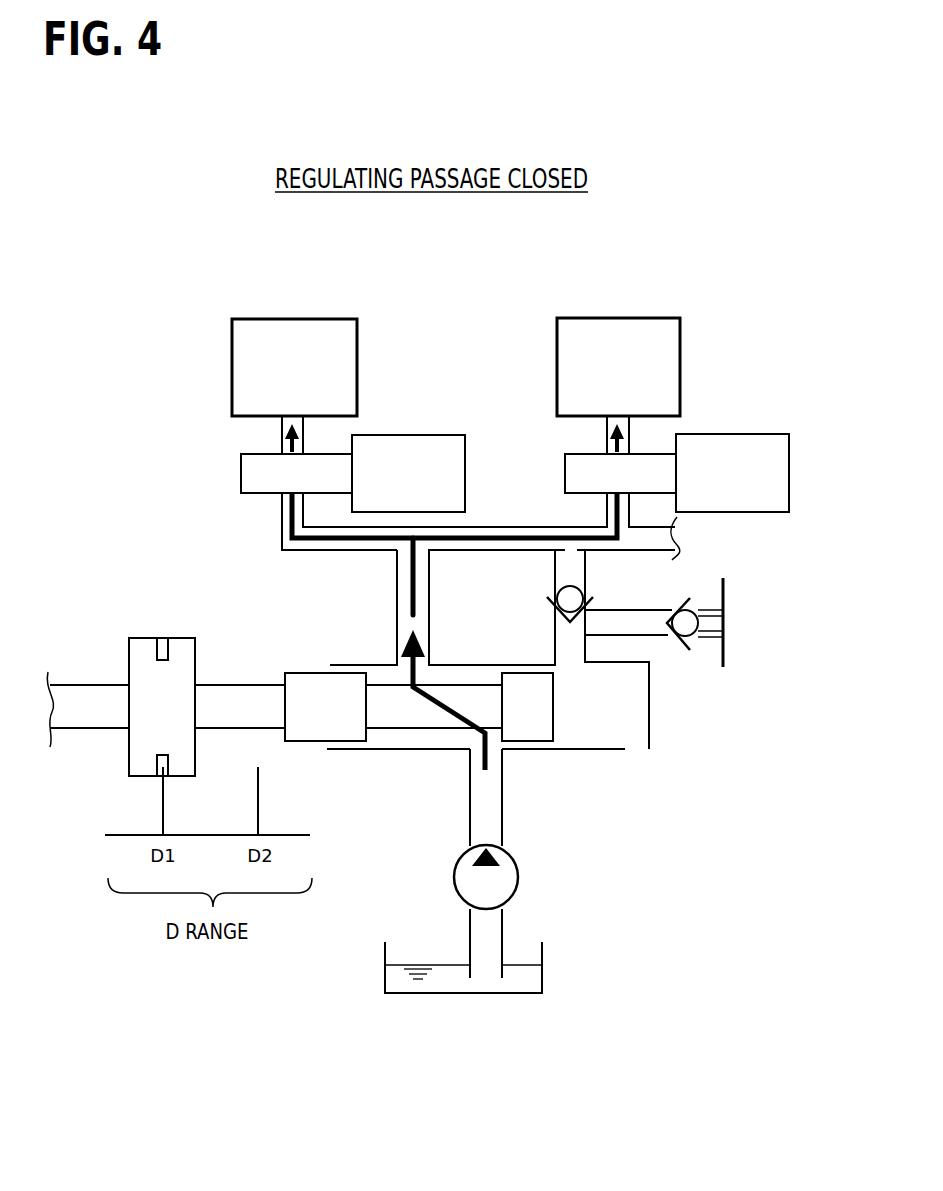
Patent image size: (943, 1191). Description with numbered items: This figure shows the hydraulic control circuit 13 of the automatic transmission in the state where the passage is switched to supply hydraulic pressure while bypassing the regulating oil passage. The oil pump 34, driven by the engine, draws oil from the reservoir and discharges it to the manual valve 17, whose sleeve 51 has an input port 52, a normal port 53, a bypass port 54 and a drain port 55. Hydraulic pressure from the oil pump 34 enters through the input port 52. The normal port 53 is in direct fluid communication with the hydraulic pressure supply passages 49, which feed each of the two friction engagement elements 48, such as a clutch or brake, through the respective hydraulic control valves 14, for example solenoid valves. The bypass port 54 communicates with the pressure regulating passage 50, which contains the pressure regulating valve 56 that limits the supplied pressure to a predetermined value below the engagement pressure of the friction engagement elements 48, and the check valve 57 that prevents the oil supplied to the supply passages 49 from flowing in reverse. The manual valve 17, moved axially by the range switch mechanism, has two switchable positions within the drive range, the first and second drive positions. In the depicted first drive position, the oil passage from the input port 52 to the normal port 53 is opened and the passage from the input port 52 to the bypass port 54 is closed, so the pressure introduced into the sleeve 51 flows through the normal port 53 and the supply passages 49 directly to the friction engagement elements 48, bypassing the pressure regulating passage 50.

The hydraulic control circuit 13 is at (781, 568).
The hydraulic control valves 14 is at (420, 435).
The manual valve 17 is at (307, 722).
The oil pump 34 is at (518, 875).
The friction engagement elements 48 is at (358, 350).
The hydraulic pressure supply passages 49 is at (287, 513).
The pressure regulating passage 50 is at (553, 623).
The sleeve 51 is at (570, 749).
The input port 52 is at (477, 760).
The normal port 53 is at (400, 643).
The bypass port 54 is at (572, 663).
The drain port 55 is at (635, 745).
The pressure regulating valve 56 is at (680, 647).
The check valve 57 is at (583, 607).